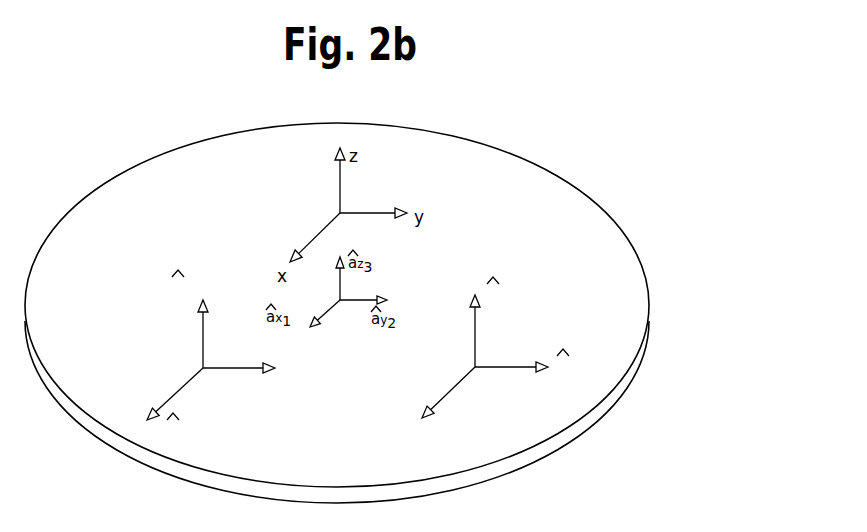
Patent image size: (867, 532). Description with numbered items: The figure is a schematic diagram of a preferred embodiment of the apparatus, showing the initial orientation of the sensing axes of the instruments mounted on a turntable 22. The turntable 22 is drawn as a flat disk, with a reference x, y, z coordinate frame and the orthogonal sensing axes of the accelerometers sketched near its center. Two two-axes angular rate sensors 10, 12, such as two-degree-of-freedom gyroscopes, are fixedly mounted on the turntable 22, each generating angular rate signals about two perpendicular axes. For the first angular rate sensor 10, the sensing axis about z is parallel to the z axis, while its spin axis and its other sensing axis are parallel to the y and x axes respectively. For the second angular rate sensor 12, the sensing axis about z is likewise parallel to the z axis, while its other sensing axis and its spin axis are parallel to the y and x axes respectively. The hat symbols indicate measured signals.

The turntable 22 is at (648, 320).
The two-axes angular rate sensor 10 is at (235, 355).
The two-axes angular rate sensor 12 is at (504, 366).